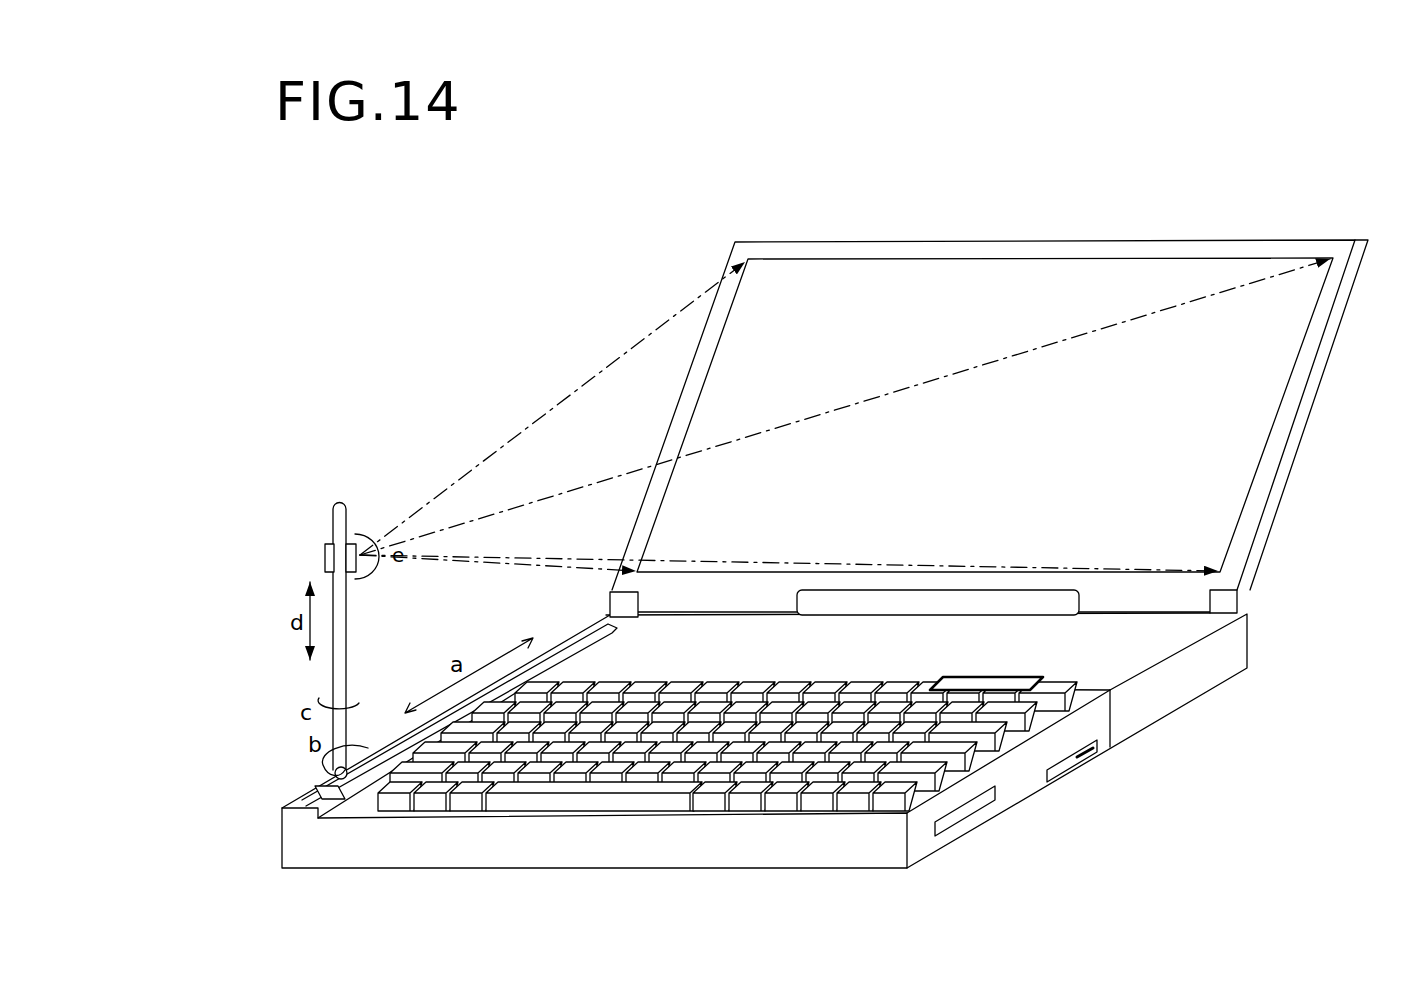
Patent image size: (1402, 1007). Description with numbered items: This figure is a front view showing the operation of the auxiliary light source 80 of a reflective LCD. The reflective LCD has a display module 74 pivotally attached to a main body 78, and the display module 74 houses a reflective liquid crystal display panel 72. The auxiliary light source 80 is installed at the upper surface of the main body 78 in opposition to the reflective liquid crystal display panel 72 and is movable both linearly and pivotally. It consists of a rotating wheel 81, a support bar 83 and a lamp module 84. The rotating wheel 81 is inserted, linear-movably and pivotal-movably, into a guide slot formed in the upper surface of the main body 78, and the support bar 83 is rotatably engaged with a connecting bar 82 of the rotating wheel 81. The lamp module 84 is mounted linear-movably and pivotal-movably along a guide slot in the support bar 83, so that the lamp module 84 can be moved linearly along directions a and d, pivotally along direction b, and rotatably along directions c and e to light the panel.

The reflective liquid crystal display panel 72 is at (1118, 258).
The display module 74 is at (1333, 335).
The main body 78 is at (1178, 698).
The auxiliary light source 80 is at (314, 612).
The rotating wheel 81 is at (316, 792).
The connecting bar 82 is at (330, 775).
The support bar 83 is at (346, 644).
The lamp module 84 is at (308, 558).